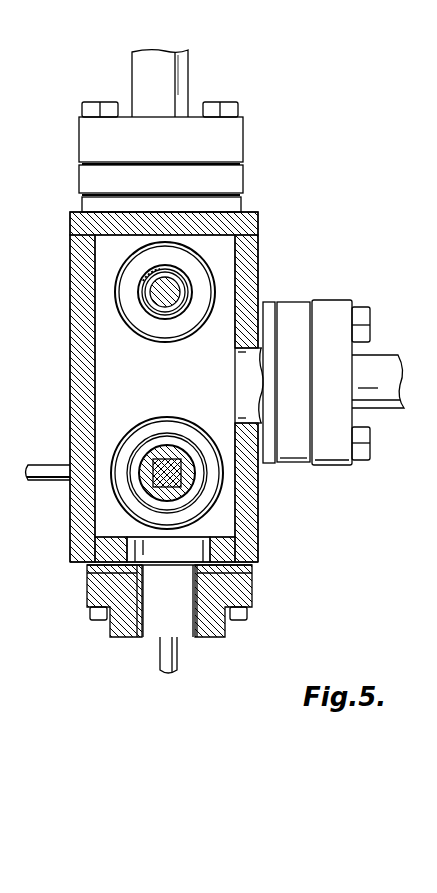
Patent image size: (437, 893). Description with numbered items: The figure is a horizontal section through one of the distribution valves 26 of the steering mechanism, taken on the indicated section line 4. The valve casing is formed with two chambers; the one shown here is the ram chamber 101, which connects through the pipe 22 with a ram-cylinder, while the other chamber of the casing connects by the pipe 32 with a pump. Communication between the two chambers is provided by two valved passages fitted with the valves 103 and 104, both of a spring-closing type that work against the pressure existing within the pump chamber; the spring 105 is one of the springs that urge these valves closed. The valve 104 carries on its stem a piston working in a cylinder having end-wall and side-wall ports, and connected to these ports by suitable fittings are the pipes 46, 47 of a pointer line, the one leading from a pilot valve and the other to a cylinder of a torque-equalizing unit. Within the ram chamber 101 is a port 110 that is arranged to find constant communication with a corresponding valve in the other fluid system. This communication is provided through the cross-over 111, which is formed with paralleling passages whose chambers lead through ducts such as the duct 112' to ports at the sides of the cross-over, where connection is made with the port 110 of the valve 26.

The section line 4— 4 is at (185, 24).
The pipe 32 is at (172, 72).
The pipe 22 is at (387, 360).
The distribution valve 26 is at (138, 387).
The ram chamber 101 is at (108, 369).
The spring 105 is at (150, 313).
The valve 103 is at (170, 315).
The valve 104 is at (157, 440).
The pipe 46 is at (38, 482).
The port 110 is at (192, 547).
The cross-over 111 is at (256, 592).
The duct 112' is at (181, 613).
The pipe 47 is at (160, 657).